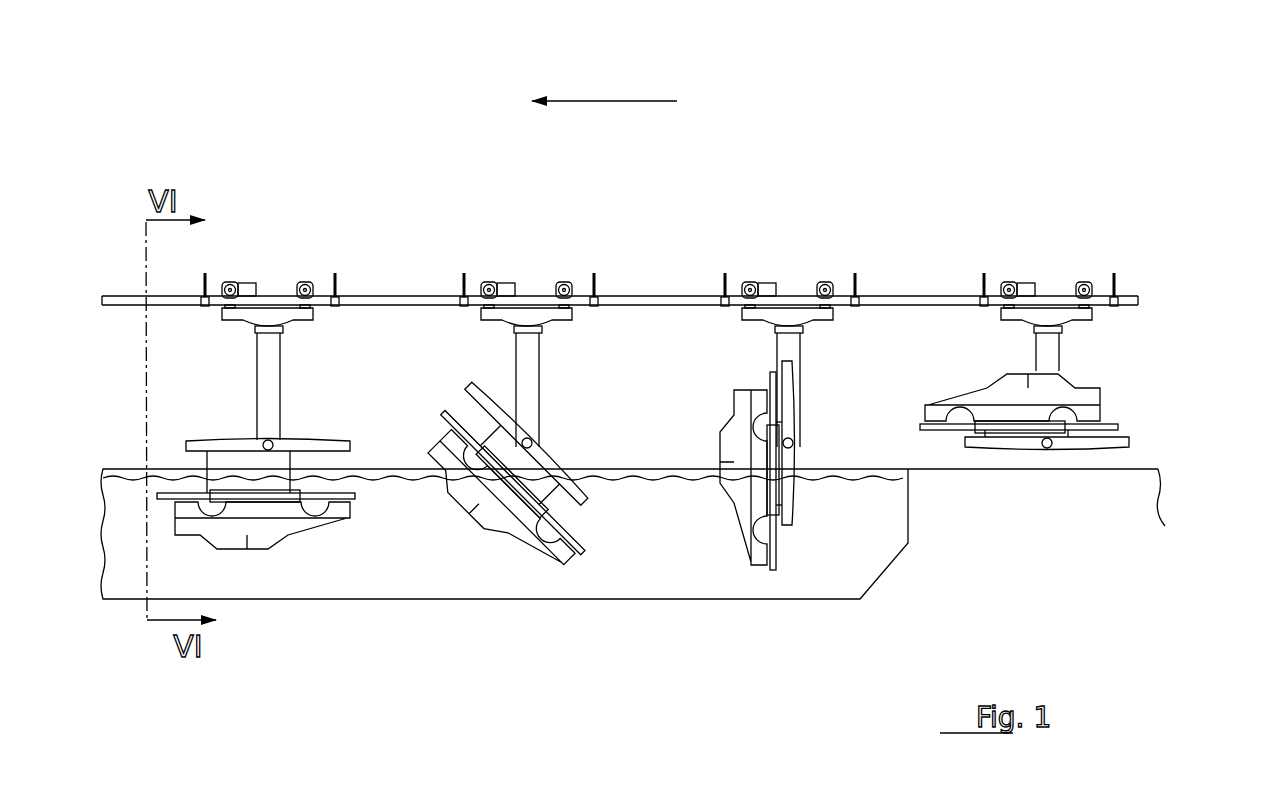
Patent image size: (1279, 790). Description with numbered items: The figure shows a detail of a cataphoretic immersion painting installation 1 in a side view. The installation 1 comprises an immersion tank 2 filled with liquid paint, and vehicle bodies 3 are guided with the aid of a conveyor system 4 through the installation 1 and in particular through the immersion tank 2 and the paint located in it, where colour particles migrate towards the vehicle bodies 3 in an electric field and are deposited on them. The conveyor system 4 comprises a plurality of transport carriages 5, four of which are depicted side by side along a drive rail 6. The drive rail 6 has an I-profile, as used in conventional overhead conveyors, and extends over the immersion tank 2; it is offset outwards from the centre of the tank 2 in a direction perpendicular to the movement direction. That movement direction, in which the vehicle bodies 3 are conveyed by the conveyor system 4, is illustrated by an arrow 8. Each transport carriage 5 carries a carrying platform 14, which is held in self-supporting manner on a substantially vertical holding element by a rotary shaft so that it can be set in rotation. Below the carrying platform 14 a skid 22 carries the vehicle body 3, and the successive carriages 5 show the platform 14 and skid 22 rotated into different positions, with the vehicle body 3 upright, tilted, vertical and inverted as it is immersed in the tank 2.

The cataphoretic immersion painting installation 1 is at (220, 118).
The immersion tank 2 is at (848, 568).
The vehicle body 3 is at (282, 538).
The conveyor system 4 is at (138, 290).
The transport carriage 5 is at (269, 322).
The drive rail 6 is at (660, 296).
The arrow (movement direction) 8 is at (593, 100).
The carrying platform 14 is at (307, 445).
The skid 22 is at (356, 497).